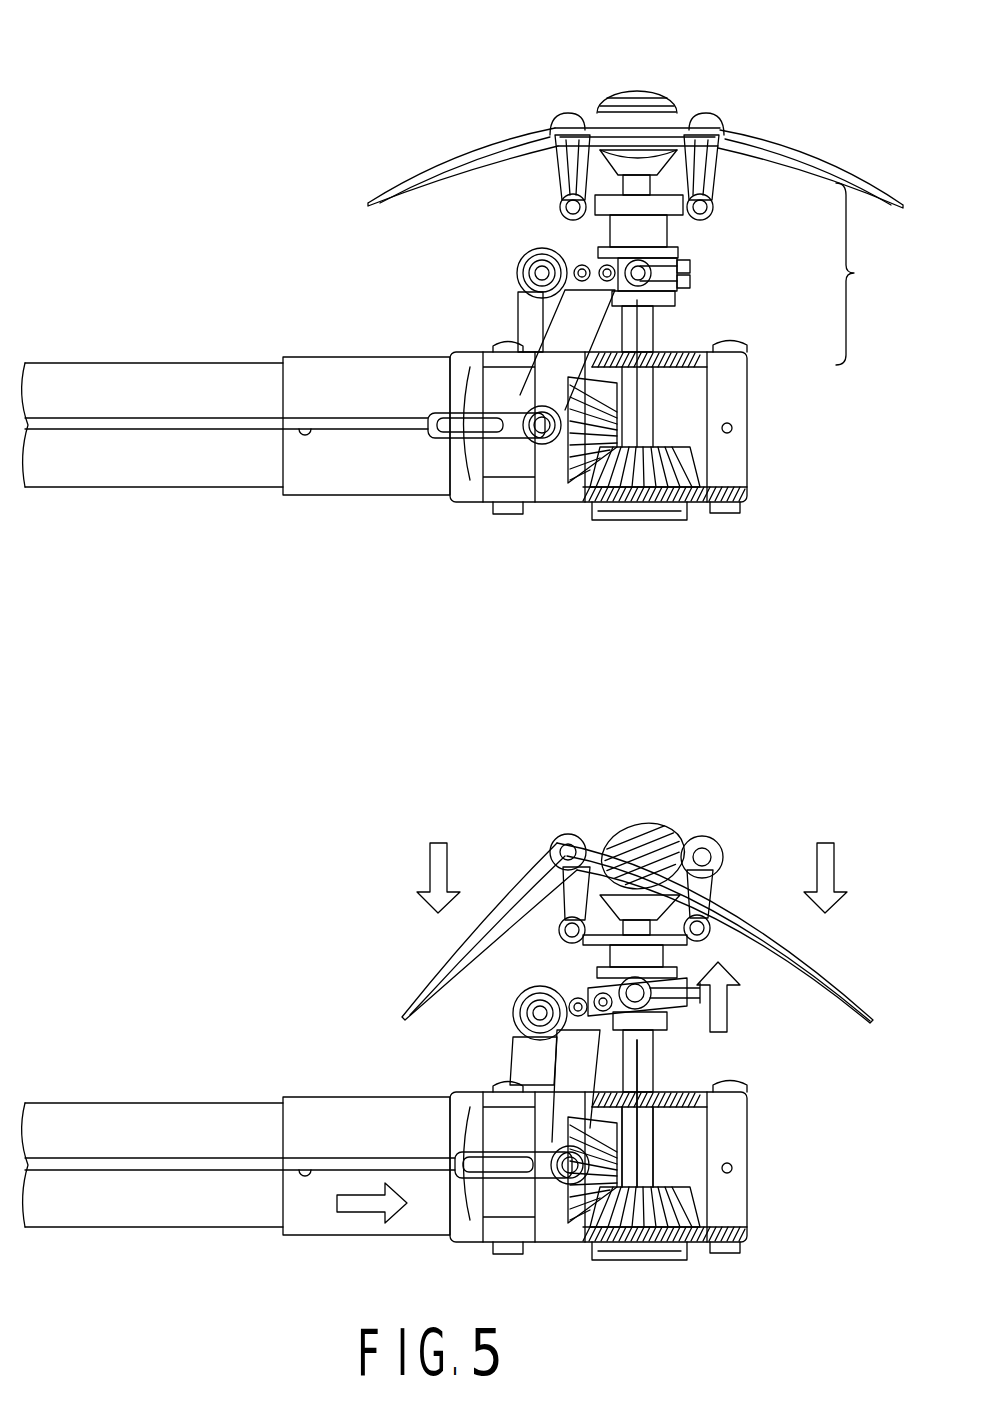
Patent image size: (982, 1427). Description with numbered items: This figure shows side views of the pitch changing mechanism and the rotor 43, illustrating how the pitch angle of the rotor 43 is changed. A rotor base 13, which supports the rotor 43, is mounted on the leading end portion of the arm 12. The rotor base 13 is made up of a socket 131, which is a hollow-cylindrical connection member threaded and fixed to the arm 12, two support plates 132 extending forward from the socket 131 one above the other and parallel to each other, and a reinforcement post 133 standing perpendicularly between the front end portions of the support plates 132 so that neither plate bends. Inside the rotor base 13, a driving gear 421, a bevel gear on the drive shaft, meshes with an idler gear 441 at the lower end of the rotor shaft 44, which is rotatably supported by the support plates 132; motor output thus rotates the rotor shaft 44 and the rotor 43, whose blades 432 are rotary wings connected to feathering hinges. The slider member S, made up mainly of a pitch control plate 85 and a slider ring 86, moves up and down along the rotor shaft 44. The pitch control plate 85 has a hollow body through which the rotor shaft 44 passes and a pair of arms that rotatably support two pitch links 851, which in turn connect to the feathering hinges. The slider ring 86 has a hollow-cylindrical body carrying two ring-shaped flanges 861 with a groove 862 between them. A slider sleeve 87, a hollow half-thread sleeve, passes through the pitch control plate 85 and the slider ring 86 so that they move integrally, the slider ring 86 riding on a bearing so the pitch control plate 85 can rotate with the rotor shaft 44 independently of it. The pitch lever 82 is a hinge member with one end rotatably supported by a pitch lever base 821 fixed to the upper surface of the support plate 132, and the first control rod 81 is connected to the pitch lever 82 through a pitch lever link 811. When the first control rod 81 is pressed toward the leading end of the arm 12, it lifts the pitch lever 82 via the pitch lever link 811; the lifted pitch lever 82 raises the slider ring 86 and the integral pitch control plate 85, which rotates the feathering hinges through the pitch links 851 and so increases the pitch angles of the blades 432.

The arm 12 is at (135, 375).
The rotor base 13 is at (760, 510).
The rotor 43 is at (672, 88).
The rotor shaft 44 is at (640, 492).
The first control rod 81 is at (130, 427).
The pitch lever 82 is at (605, 250).
The pitch control plate 85 is at (668, 222).
The slider ring 86 is at (683, 250).
The slider sleeve 87 is at (700, 300).
The socket 131 is at (333, 465).
The support plates 132 is at (495, 492).
The reinforcement post 133 is at (733, 462).
The driving gear 421 is at (585, 487).
The blades 432 is at (478, 157).
The idler gear 441 is at (643, 430).
The pitch lever link 811 is at (512, 310).
The pitch lever base 821 is at (530, 325).
The pitch links 851 is at (550, 167).
The flanges 861 is at (683, 261).
The groove 862 is at (713, 288).
The slider member S is at (857, 274).